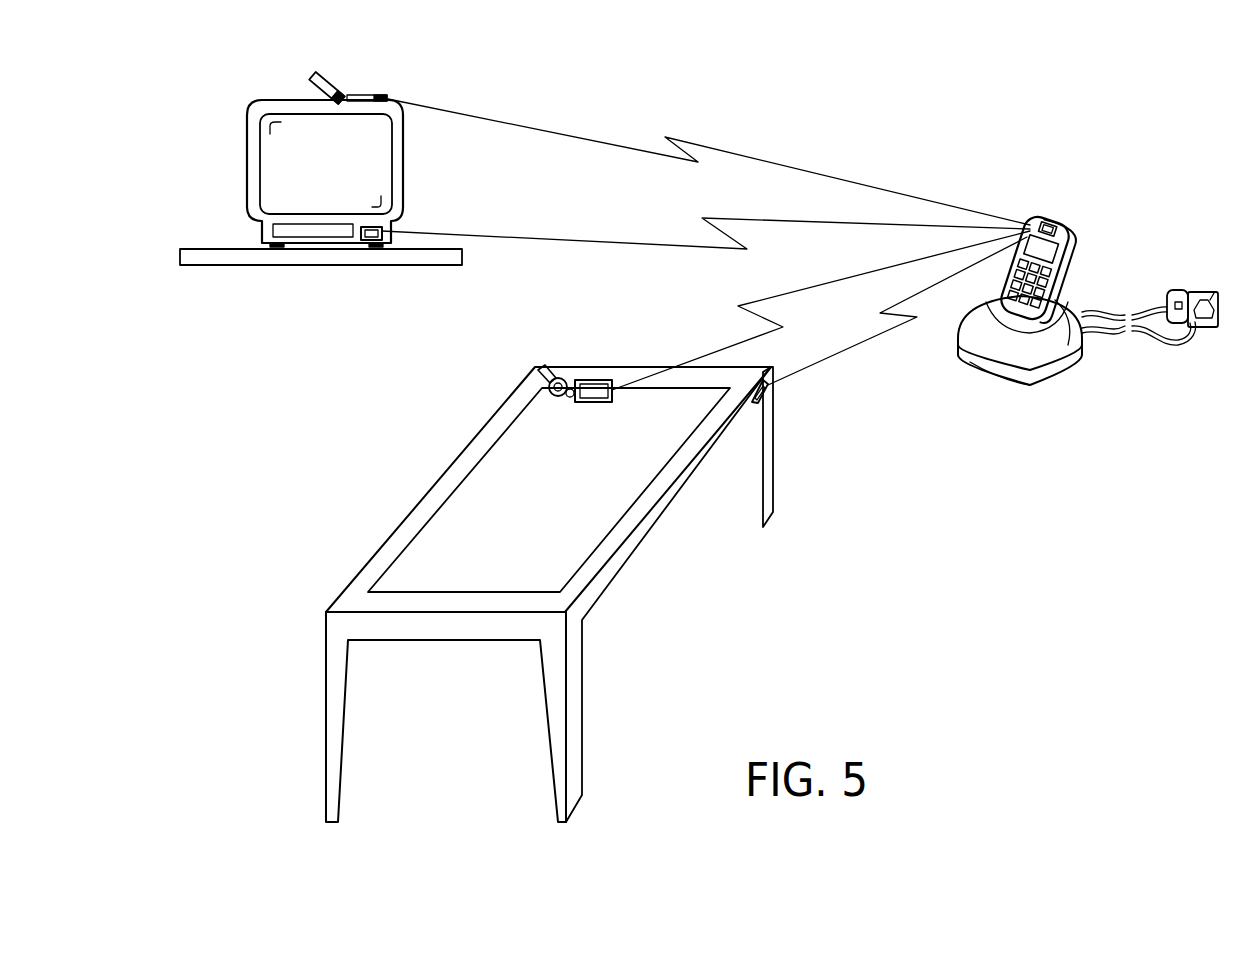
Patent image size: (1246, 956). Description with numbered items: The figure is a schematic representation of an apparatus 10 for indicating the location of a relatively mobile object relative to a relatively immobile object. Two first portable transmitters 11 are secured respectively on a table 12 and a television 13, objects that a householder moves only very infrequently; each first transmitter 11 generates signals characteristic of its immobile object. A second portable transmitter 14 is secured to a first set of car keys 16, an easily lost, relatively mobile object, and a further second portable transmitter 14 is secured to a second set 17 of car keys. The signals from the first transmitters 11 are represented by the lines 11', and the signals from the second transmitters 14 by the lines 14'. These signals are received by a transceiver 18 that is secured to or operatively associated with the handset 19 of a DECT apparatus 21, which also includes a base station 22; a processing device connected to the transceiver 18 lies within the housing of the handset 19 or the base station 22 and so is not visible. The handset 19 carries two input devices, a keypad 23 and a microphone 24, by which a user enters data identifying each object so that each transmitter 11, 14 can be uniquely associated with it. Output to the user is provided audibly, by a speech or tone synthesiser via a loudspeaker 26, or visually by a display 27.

The apparatus 10 is at (927, 554).
The first portable transmitter 11 is at (591, 321).
The signals from the first transmitters 11' is at (706, 311).
The table 12 is at (396, 531).
The television 13 is at (401, 165).
The second portable transmitter 14 is at (458, 213).
The signals from the second transmitter 14' is at (709, 233).
The first set of car keys 16 is at (562, 368).
The second set of car keys 17 is at (374, 94).
The transceiver 18 is at (1054, 203).
The handset 19 is at (1051, 247).
The DECT apparatus 21 is at (1170, 204).
The base station 22 is at (1008, 367).
The keypad 23 is at (1005, 307).
The microphone 24 is at (1046, 370).
The loudspeaker 26 is at (1066, 275).
The visible display 27 is at (1007, 283).